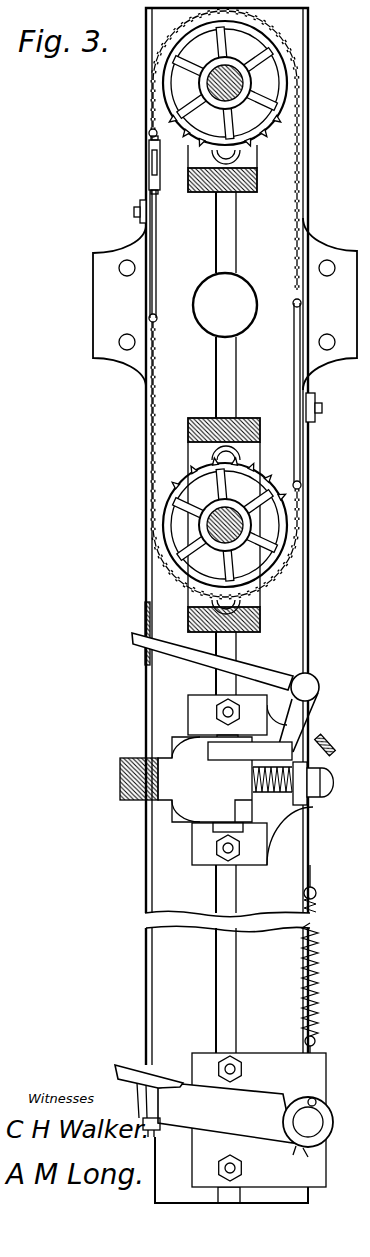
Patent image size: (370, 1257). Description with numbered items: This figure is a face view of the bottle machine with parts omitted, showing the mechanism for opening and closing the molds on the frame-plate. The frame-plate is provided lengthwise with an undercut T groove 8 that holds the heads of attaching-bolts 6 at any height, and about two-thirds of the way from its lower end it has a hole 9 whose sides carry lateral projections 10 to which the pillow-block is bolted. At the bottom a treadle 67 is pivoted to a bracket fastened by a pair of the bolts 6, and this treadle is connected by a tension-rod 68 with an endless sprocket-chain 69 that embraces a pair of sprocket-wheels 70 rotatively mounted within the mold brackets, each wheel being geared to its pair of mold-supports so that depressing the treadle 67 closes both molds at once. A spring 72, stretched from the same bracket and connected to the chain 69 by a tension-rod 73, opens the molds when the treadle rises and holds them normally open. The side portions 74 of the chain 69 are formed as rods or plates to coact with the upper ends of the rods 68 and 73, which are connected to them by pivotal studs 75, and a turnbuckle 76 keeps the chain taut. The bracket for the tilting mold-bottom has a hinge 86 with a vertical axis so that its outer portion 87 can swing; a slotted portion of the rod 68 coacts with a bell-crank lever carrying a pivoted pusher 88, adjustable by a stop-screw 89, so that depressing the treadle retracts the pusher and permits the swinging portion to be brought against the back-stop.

The attaching-bolts 6 is at (215, 13).
The T groove 8 is at (227, 240).
The hole 9 is at (225, 305).
The lateral projections 10 is at (225, 304).
The treadle 67 is at (210, 1108).
The tension-rod 68 is at (145, 998).
The endless sprocket-chain 69 is at (308, 183).
The sprocket-wheels 70 is at (162, 92).
The spring 72 is at (322, 959).
The tension-rod 73 is at (241, 605).
The side portions of the chain 74 is at (158, 270).
The pivotal studs 75 is at (134, 207).
The turnbuckle 76 is at (148, 166).
The hinge 86 is at (205, 779).
The outer portion of the bracket 87 is at (150, 779).
The pivoted pusher 88 is at (250, 752).
The stop-screw 89 is at (333, 748).